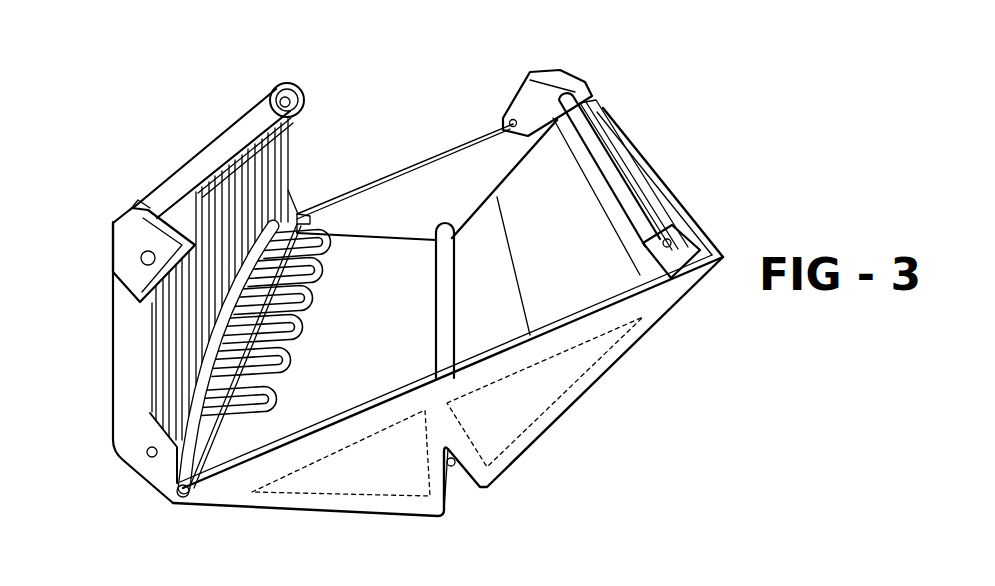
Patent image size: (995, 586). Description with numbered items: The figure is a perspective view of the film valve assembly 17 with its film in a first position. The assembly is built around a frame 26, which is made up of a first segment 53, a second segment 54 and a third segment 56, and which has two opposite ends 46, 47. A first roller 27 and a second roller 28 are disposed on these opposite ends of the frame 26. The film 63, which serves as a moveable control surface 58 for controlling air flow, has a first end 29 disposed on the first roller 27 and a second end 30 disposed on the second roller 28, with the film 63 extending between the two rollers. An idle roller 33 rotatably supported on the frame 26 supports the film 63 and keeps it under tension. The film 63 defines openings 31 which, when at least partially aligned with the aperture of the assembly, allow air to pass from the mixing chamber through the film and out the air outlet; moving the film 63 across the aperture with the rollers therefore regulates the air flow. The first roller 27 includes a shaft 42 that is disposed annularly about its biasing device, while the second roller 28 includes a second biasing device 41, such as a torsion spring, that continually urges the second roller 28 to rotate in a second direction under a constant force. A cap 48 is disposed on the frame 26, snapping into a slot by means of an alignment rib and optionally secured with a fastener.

The film valve assembly 17 is at (492, 76).
The frame 26 is at (413, 193).
The first roller 27 is at (660, 187).
The second roller 28 is at (200, 190).
The first end 29 is at (605, 110).
The second end 30 is at (177, 173).
The openings 31 is at (237, 430).
The idle roller 33 is at (453, 218).
The second biasing device 41 is at (277, 90).
The shaft 42 is at (241, 107).
The end 46 is at (700, 227).
The end 47 is at (145, 204).
The cap 48 is at (163, 227).
The first segment 53 is at (113, 347).
The second segment 54 is at (333, 483).
The third segment 56 is at (587, 360).
The control surface 58 is at (157, 397).
The film 63 is at (375, 250).